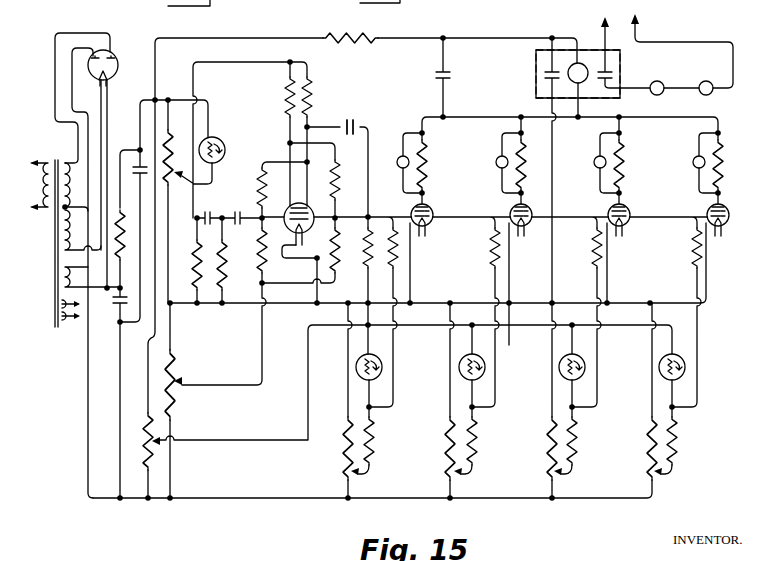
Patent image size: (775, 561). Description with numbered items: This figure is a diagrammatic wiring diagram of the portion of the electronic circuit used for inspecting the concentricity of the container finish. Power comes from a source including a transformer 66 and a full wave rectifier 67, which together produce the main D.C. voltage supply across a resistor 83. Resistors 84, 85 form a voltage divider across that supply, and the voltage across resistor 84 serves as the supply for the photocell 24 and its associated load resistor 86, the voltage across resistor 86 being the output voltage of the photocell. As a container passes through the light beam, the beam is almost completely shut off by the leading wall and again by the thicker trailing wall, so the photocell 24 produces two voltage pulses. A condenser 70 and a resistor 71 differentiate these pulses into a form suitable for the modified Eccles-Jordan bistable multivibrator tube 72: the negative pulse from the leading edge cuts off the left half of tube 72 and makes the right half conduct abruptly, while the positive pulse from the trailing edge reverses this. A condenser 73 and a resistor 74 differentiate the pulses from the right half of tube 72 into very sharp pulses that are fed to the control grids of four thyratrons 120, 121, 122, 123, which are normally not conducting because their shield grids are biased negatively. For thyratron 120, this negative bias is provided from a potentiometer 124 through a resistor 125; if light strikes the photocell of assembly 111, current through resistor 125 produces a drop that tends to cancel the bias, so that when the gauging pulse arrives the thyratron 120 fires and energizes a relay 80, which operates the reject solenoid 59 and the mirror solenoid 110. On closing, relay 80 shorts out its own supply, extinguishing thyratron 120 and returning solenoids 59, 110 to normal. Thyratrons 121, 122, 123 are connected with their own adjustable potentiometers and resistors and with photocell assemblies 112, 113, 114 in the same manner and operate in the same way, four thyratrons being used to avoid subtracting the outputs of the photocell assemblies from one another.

The full wave rectifier 67 is at (114, 52).
The transformer 66 is at (55, 160).
The photocell 24 is at (221, 140).
The resistor 84 is at (173, 172).
The condenser 70 is at (214, 213).
The load resistor 86 is at (192, 258).
The resistor 71 is at (220, 272).
The condenser 73 is at (351, 120).
The tube 72 is at (310, 209).
The resistor 74 is at (362, 250).
The relay 80 is at (579, 63).
The reject solenoid 59 is at (658, 81).
The mirror solenoid 110 is at (699, 81).
The thyratron 120 is at (431, 204).
The thyratron 121 is at (530, 204).
The thyratron 122 is at (628, 204).
The thyratron 123 is at (728, 206).
The photocell assembly 111 is at (377, 379).
The photocell assembly 112 is at (480, 379).
The photocell assembly 113 is at (580, 379).
The photocell assembly 114 is at (680, 379).
The resistor 83 is at (143, 418).
The resistor 85 is at (176, 399).
The potentiometer 124 is at (345, 445).
The resistor 125 is at (375, 442).